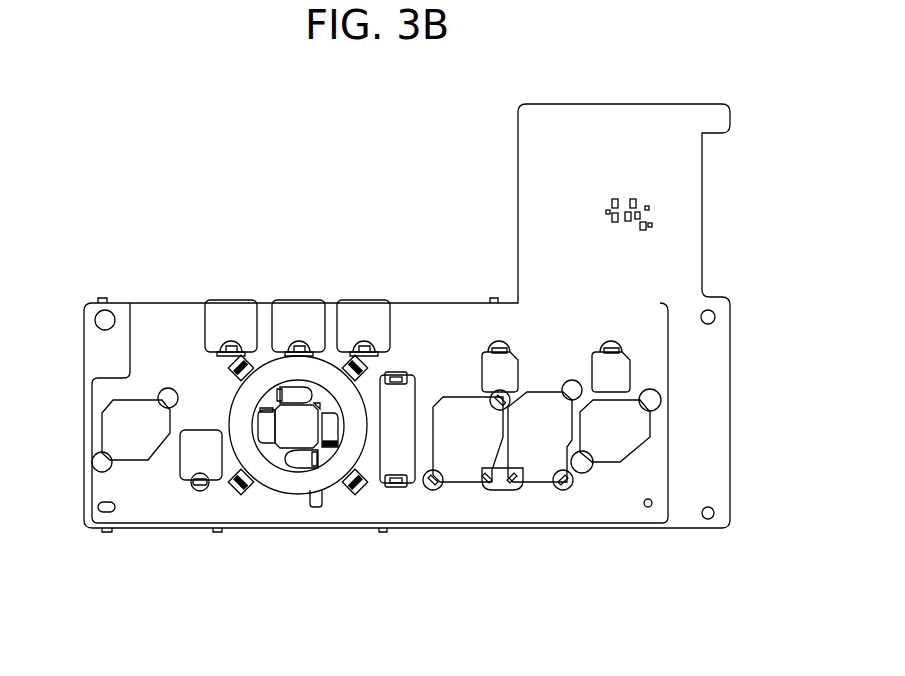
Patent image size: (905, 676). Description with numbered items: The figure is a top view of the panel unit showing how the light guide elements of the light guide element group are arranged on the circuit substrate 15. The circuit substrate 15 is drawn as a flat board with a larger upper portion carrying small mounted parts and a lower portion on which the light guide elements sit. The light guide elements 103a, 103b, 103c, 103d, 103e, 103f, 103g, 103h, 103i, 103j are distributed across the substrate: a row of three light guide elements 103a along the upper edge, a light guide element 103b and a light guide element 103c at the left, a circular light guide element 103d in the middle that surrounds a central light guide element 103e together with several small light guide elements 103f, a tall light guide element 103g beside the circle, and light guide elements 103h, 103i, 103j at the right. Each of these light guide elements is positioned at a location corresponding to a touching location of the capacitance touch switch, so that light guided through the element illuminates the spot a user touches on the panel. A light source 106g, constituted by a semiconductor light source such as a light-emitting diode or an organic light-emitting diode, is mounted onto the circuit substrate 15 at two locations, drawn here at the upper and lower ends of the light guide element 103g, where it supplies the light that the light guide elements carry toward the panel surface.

The circuit substrate 15 is at (690, 217).
The light guide element 103a is at (303, 298).
The light guide element 103b is at (130, 448).
The light guide element 103c is at (188, 460).
The light guide element 103d is at (233, 475).
The light guide element 103e is at (310, 435).
The light guide element 103f is at (298, 458).
The light guide element 103g is at (400, 453).
The light guide element 103h is at (463, 453).
The light guide element 103i is at (537, 455).
The light guide element 103j is at (615, 455).
The light source 106g is at (410, 478).